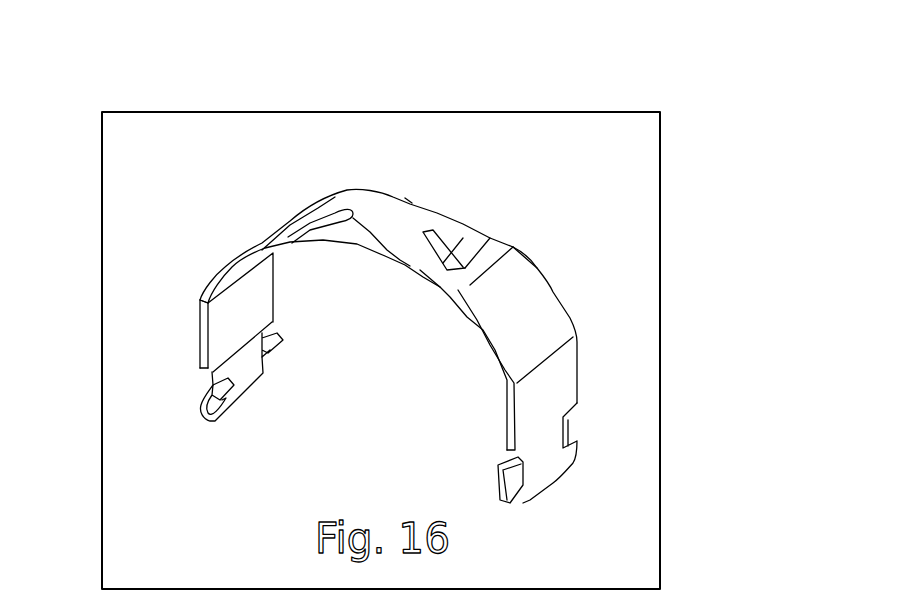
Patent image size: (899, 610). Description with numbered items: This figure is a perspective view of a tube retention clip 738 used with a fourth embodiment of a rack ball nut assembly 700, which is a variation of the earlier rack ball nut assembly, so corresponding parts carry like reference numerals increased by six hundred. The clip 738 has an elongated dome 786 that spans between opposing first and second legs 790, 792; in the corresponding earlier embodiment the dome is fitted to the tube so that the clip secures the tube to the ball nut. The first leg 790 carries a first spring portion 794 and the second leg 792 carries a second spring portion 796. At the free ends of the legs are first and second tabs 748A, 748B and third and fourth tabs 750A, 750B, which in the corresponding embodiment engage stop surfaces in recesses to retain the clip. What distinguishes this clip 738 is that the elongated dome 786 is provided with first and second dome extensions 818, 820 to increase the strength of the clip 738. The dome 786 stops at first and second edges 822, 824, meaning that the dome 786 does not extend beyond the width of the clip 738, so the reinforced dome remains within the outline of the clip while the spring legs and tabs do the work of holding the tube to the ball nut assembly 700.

The rack ball nut assembly 700 is at (586, 112).
The tube retention clip 738 is at (445, 213).
The first tab 748A is at (497, 478).
The second tab 748B is at (568, 427).
The third tab 750A is at (213, 422).
The fourth tab 750B is at (277, 345).
The elongated dome 786 is at (373, 205).
The first leg 790 is at (560, 373).
The second leg 792 is at (200, 332).
The first spring portion 794 is at (538, 297).
The second spring portion 796 is at (264, 240).
The first dome extension 818 is at (462, 252).
The second dome extension 820 is at (320, 200).
The first edge 822 is at (412, 203).
The second edge 824 is at (428, 283).